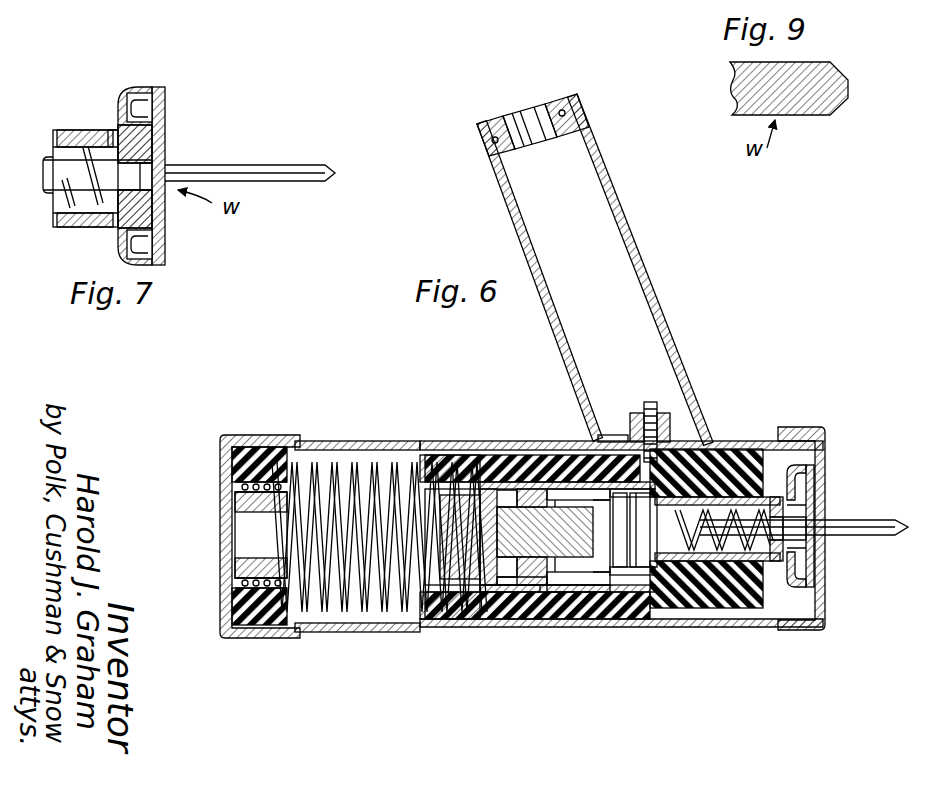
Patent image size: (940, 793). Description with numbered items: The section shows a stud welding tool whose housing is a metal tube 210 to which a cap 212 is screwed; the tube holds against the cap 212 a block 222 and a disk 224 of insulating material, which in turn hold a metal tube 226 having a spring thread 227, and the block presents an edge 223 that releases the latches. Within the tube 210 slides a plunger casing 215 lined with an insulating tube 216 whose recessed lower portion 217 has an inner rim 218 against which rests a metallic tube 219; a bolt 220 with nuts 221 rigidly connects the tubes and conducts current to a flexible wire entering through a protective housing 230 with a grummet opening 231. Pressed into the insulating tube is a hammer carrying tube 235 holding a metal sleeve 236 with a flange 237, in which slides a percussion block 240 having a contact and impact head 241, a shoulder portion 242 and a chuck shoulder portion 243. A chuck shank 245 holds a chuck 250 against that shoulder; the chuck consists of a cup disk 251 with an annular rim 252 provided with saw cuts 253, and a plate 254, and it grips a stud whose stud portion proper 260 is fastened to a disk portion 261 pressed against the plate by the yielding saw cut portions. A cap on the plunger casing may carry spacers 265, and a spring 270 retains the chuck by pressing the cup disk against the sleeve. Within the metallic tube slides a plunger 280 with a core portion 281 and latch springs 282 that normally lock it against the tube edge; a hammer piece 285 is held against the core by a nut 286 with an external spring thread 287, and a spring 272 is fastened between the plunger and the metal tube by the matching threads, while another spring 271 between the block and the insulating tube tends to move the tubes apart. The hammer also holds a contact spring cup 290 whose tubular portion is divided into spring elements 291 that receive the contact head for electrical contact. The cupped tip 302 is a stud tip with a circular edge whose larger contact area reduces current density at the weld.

In FIG. 6, the metal tube 210 is at (346, 633).
In FIG. 6, the cap 212 is at (246, 640).
In FIG. 6, the plunger casing 215 is at (547, 624).
In FIG. 6, the tube of insulating material 216 is at (452, 470).
In FIG. 6, the recessed portion 217 is at (470, 628).
In FIG. 6, the inner rim 218 is at (810, 468).
In FIG. 6, the metallic tube 219 is at (548, 610).
In FIG. 6, the bolt 220 is at (652, 404).
In FIG. 6, the nuts 221 is at (668, 414).
In FIG. 6, the block 222 is at (622, 442).
In FIG. 6, the edge 223 is at (304, 622).
In FIG. 7, the disk 224 is at (158, 164).
In FIG. 6, the disk 224 is at (232, 520).
In FIG. 6, the metal tube 226 is at (262, 560).
In FIG. 6, the spring thread 227 is at (240, 567).
In FIG. 6, the protective housing 230 is at (613, 190).
In FIG. 6, the grummet opening 231 is at (530, 112).
In FIG. 6, the hammer carrying tube 235 is at (742, 620).
In FIG. 6, the metal sleeve 236 is at (722, 606).
In FIG. 6, the flange 237 is at (655, 576).
In FIG. 6, the percussion block 240 is at (642, 570).
In FIG. 6, the contact and impact head 241 is at (620, 570).
In FIG. 6, the shoulder portion 242 is at (722, 444).
In FIG. 6, the chuck shoulder portion 243 is at (785, 528).
In FIG. 7, the chuck shank 245 is at (130, 175).
In FIG. 6, the chuck shank 245 is at (800, 494).
In FIG. 7, the chuck 250 is at (170, 102).
In FIG. 6, the chuck 250 is at (778, 478).
In FIG. 7, the cup disk 251 is at (150, 70).
In FIG. 7, the annular rim 252 is at (160, 90).
In FIG. 7, the saw cuts 253 is at (163, 240).
In FIG. 7, the plate 254 is at (124, 114).
In FIG. 7, the stud portion proper 260 is at (264, 156).
In FIG. 7, the disk portion 261 is at (166, 122).
In FIG. 6, the spacers 265 is at (886, 521).
In FIG. 7, the spring 270 is at (78, 212).
In FIG. 6, the spring 270 is at (765, 606).
In FIG. 6, the spring 271 is at (406, 630).
In FIG. 6, the spring 272 is at (378, 470).
In FIG. 6, the plunger 280 is at (565, 535).
In FIG. 6, the core portion 281 is at (522, 600).
In FIG. 6, the latch springs 282 is at (492, 612).
In FIG. 6, the hammer piece 285 is at (512, 500).
In FIG. 6, the nut 286 is at (482, 494).
In FIG. 6, the spring thread 287 is at (432, 630).
In FIG. 6, the contact spring cup 290 is at (548, 456).
In FIG. 6, the spring elements 291 is at (585, 456).
In FIG. 9, the cupped tip 302 is at (848, 89).